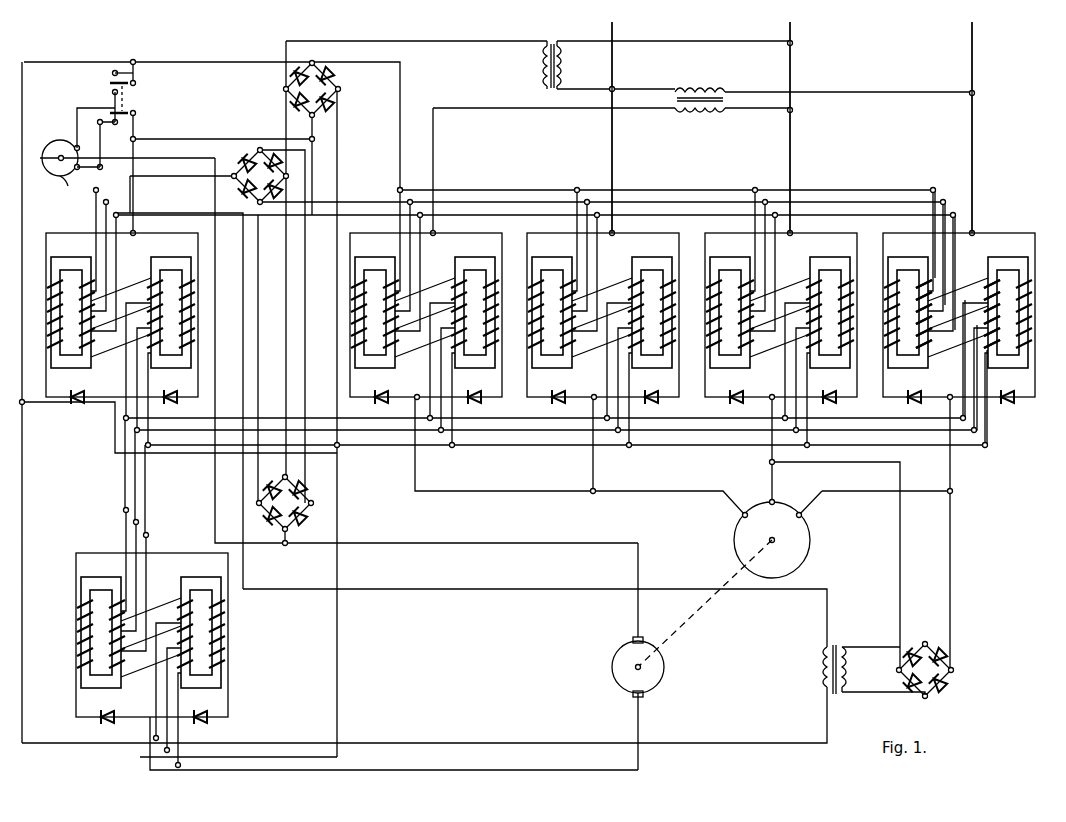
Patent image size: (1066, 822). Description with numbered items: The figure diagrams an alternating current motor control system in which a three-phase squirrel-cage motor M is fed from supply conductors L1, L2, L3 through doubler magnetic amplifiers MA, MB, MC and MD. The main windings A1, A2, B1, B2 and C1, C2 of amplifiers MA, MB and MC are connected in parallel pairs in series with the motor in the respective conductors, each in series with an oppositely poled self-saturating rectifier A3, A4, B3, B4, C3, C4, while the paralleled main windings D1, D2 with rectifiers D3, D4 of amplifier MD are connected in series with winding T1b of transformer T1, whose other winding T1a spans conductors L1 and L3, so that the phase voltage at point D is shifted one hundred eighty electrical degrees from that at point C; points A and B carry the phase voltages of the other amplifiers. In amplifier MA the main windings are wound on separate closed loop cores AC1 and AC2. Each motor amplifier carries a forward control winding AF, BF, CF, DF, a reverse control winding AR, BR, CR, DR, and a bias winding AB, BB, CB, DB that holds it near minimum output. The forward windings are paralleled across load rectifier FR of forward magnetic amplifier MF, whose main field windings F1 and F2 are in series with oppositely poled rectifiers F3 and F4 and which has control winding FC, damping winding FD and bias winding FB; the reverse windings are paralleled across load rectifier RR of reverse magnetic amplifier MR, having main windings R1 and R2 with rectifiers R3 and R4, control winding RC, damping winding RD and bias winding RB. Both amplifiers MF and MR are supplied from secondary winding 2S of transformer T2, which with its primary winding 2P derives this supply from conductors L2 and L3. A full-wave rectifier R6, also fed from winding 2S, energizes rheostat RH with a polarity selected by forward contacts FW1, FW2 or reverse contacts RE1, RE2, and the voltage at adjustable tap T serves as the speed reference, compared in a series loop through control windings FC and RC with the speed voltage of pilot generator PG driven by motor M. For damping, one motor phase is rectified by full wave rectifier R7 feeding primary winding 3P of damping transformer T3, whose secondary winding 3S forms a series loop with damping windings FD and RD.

The adjustable tap T is at (44, 160).
The rheostat RH is at (64, 181).
The forward contact FW1 is at (112, 73).
The forward contact FW2 is at (112, 105).
The reverse contact RE1 is at (135, 83).
The reverse contact RE2 is at (135, 118).
The full-wave rectifier R6 is at (286, 90).
The load rectifier FR is at (248, 164).
The load rectifier RR is at (290, 518).
The full wave rectifier R7 is at (932, 688).
The transformer T2 is at (562, 36).
The secondary winding 2S is at (540, 69).
The transformer T2 primary winding 2P is at (571, 66).
The transformer T1 is at (758, 108).
The second winding of transformer T1 T1a is at (702, 92).
The winding of transformer T1 T1b is at (720, 118).
The supply conductor L1 is at (985, 127).
The supply conductor L2 is at (803, 127).
The supply conductor L3 is at (625, 127).
The motor M is at (830, 546).
The pilot generator PG is at (694, 679).
The damping transformer T3 is at (828, 644).
The secondary winding 3S is at (825, 666).
The primary winding 3P is at (844, 680).
The forward magnetic amplifier MF is at (122, 318).
The bias winding FB is at (121, 302).
The main field winding F1 is at (43, 314).
The main field winding F2 is at (204, 314).
The control winding FC is at (121, 278).
The damping winding FD is at (120, 357).
The rectifier F3 is at (66, 386).
The rectifier F4 is at (176, 386).
The magnetic amplifier MD is at (426, 318).
The forward control winding DF is at (425, 304).
The main winding D1 is at (344, 314).
The main winding D2 is at (505, 314).
The bias winding DB is at (425, 280).
The reverse control winding DR is at (424, 357).
The self-saturating rectifier D3 is at (367, 403).
The self-saturating rectifier D4 is at (490, 403).
The phase voltage point D is at (406, 406).
The magnetic amplifier MC is at (603, 318).
The forward control winding CF is at (602, 304).
The main winding C1 is at (521, 310).
The main winding C2 is at (682, 314).
The bias winding CB is at (602, 280).
The reverse control winding CR is at (601, 357).
The self-saturating rectifier C3 is at (545, 403).
The self-saturating rectifier C4 is at (667, 403).
The phase voltage point C is at (584, 406).
The magnetic amplifier MB is at (781, 318).
The forward control winding BF is at (780, 304).
The main winding B1 is at (699, 310).
The main winding B2 is at (860, 314).
The bias winding BB is at (780, 280).
The reverse control winding BR is at (779, 357).
The self-saturating rectifier B3 is at (723, 403).
The self-saturating rectifier B4 is at (845, 403).
The phase voltage point B is at (762, 406).
The magnetic amplifier MA is at (959, 318).
The core AC1 is at (908, 304).
The core AC2 is at (1008, 304).
The forward control winding AF is at (960, 338).
The main winding A1 is at (877, 310).
The main winding A2 is at (1040, 312).
The bias winding AB is at (958, 280).
The reverse control winding AR is at (958, 359).
The self-saturating rectifier A3 is at (901, 403).
The self-saturating rectifier A4 is at (1023, 403).
The phase voltage point A is at (940, 406).
The reverse magnetic amplifier MR is at (152, 638).
The bias winding RB is at (151, 624).
The main winding R1 is at (70, 634).
The main winding R2 is at (232, 634).
The control winding RC is at (151, 599).
The damping winding RD is at (150, 675).
The rectifier R3 is at (96, 707).
The rectifier R4 is at (206, 707).